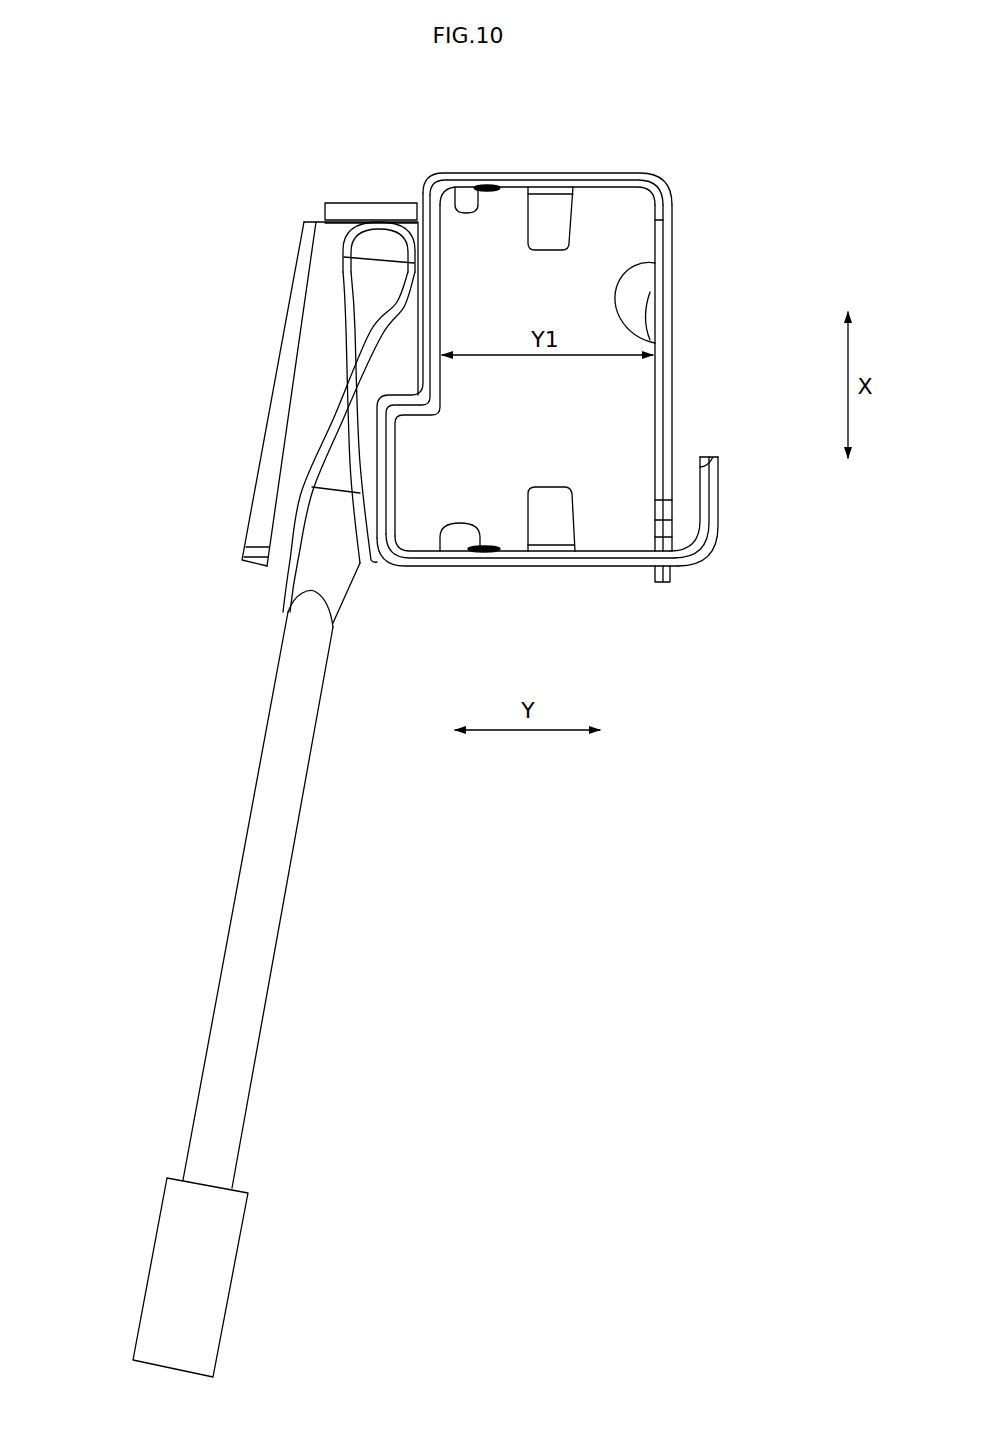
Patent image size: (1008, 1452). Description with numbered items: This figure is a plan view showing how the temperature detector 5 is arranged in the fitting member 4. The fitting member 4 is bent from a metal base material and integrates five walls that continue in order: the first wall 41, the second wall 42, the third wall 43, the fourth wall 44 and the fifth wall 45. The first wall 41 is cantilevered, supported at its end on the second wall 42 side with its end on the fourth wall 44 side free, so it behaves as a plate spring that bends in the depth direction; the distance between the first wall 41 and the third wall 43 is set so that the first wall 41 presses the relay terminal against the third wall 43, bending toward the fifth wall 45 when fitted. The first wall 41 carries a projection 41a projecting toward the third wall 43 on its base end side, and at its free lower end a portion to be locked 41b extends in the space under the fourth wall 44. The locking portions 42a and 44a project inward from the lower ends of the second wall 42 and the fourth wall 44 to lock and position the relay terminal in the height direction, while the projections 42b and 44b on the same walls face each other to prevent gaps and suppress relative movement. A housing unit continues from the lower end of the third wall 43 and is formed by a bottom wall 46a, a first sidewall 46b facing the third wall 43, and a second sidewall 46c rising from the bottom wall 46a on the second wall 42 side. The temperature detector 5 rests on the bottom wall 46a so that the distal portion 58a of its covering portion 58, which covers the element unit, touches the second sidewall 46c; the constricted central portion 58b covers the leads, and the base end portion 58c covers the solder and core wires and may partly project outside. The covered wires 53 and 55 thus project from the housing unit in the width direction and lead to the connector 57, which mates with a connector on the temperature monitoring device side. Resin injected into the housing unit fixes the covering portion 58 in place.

The fitting member 4 is at (661, 166).
The first wall 41 is at (680, 383).
The projection 41a is at (650, 262).
The portion to be locked 41b is at (660, 584).
The second wall 42 is at (592, 170).
The locking portion 42a is at (550, 210).
The projection 42b is at (457, 200).
The third wall 43 is at (411, 347).
The fourth wall 44 is at (510, 576).
The locking portion 44a is at (552, 525).
The projection 44b is at (453, 537).
The fifth wall 45 is at (722, 496).
The bottom wall 46a is at (336, 308).
The first sidewall 46b is at (267, 415).
The second sidewall 46c is at (375, 201).
The temperature detector 5 is at (276, 586).
The covered wire 53 is at (234, 827).
The covered wire 55 is at (258, 900).
The connector 57 is at (168, 1260).
The covering portion 58 is at (323, 446).
The distal portion 58a is at (367, 242).
The central portion 58b is at (350, 380).
The base end portion 58c is at (318, 527).